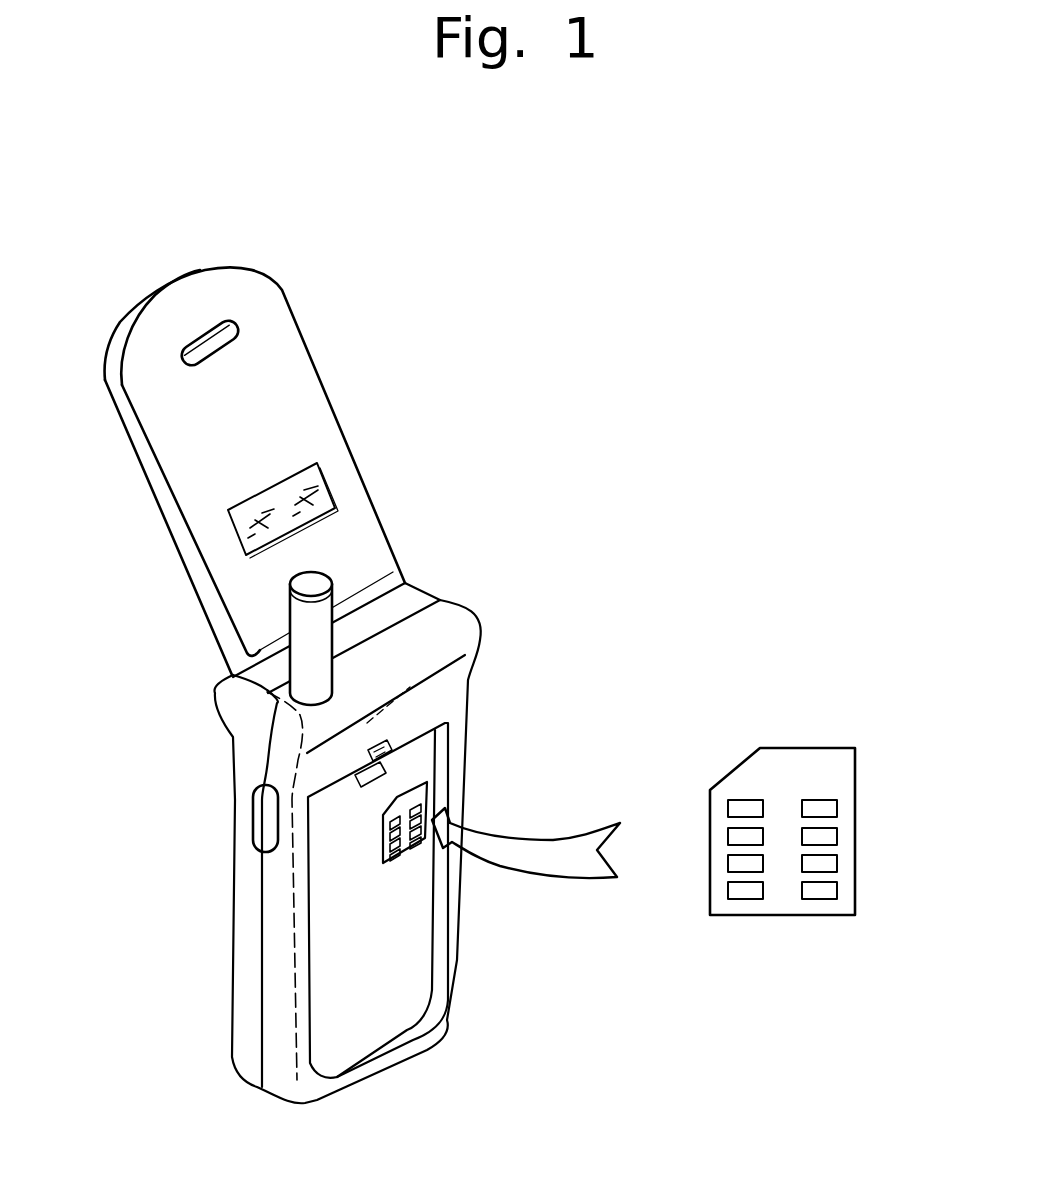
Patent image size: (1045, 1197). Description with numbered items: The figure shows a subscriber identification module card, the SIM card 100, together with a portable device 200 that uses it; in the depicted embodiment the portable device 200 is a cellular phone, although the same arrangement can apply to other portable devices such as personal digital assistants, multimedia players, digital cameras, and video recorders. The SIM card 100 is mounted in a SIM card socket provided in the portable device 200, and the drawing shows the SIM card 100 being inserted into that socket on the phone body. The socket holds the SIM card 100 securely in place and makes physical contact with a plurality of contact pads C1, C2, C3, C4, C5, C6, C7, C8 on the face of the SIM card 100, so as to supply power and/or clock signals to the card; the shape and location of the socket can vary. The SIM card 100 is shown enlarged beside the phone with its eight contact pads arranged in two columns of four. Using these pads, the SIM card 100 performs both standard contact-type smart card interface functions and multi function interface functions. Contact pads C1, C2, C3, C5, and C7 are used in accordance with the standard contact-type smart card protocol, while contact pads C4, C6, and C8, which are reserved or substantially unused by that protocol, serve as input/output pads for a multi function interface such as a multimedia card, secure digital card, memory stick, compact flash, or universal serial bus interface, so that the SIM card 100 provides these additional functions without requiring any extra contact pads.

The portable device 200 is at (447, 617).
The SIM card 100 is at (812, 748).
The contact pad C1 is at (728, 808).
The contact pad C2 is at (728, 836).
The contact pad C3 is at (728, 863).
The contact pad C4 is at (728, 890).
The contact pad C5 is at (837, 808).
The contact pad C6 is at (837, 836).
The contact pad C7 is at (837, 863).
The contact pad C8 is at (837, 890).